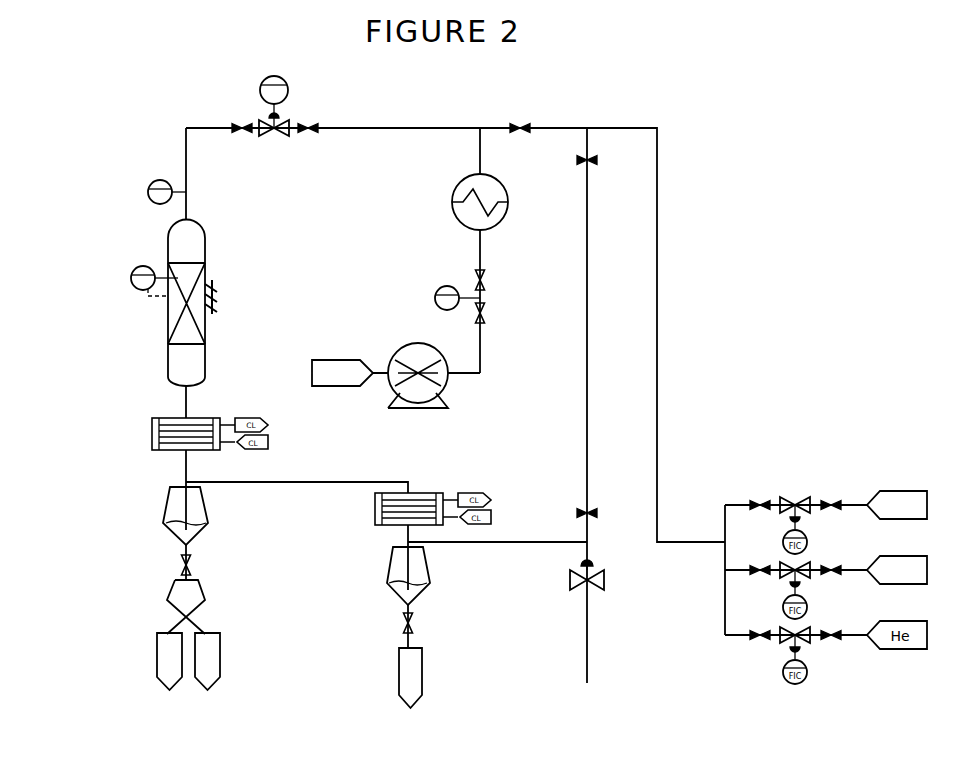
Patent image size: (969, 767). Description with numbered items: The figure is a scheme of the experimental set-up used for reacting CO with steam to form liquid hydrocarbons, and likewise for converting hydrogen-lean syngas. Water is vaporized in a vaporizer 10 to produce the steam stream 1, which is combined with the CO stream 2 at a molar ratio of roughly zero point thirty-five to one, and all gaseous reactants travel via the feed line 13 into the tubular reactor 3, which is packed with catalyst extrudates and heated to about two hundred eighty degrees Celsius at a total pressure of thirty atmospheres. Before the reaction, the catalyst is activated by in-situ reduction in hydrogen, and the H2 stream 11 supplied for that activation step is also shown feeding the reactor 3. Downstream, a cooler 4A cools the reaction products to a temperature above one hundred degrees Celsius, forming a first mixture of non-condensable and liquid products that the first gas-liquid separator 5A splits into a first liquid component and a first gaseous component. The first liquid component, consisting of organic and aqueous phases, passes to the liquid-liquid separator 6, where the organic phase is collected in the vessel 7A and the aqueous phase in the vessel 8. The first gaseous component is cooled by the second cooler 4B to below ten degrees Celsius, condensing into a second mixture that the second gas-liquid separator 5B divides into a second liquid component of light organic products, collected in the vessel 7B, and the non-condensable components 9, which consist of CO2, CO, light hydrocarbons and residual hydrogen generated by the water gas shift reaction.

The steam stream 1 is at (437, 377).
The CO stream 2 is at (828, 577).
The tubular reactor 3 is at (145, 319).
The cooler 4A is at (223, 474).
The second cooler 4B is at (463, 527).
The first gas-liquid separator 5A is at (268, 531).
The second gas-liquid separator 5B is at (443, 597).
The liquid-liquid separator 6 is at (229, 606).
The vessel 7A is at (133, 677).
The vessel 7B is at (431, 674).
The vessel 8 is at (235, 678).
The non-condensable components 9 is at (546, 600).
The vaporizer 10 is at (501, 273).
The H2 stream 11 is at (826, 511).
The feed line 13 is at (436, 379).